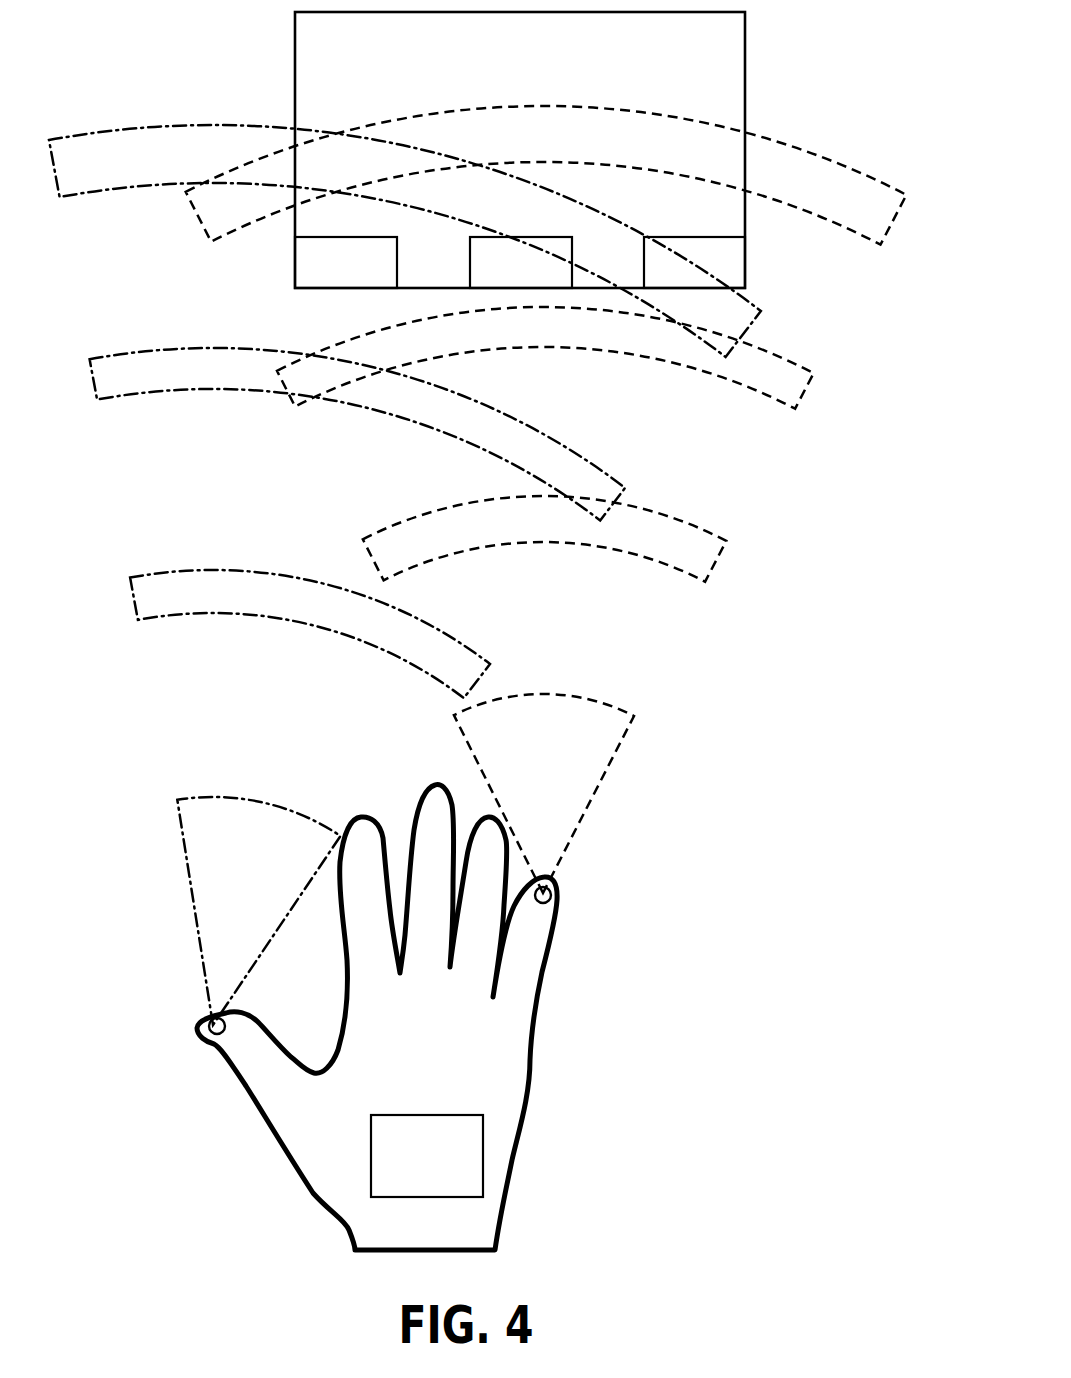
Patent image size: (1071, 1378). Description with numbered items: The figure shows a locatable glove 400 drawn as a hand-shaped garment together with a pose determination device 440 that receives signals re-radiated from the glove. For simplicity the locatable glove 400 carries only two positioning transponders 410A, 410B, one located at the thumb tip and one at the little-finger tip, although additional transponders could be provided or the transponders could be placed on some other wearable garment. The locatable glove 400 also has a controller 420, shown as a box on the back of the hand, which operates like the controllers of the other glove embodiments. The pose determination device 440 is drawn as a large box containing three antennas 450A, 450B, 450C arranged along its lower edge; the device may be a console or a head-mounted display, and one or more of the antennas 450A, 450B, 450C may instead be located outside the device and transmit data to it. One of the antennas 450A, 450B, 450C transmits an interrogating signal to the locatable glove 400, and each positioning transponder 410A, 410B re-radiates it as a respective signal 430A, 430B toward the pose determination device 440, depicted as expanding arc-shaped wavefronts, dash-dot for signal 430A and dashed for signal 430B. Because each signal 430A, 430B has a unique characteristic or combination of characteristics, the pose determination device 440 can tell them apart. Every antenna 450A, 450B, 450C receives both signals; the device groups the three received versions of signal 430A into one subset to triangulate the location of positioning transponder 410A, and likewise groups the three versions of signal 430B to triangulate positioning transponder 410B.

The locatable glove 400 is at (446, 1236).
The positioning transponder 410A is at (216, 1041).
The positioning transponder 410B is at (556, 895).
The controller 420 is at (446, 1178).
The signal 430A is at (172, 400).
The signal 430B is at (802, 387).
The pose determination device 440 is at (503, 74).
The antenna 450A is at (322, 287).
The antenna 450B is at (497, 287).
The antenna 450C is at (671, 287).